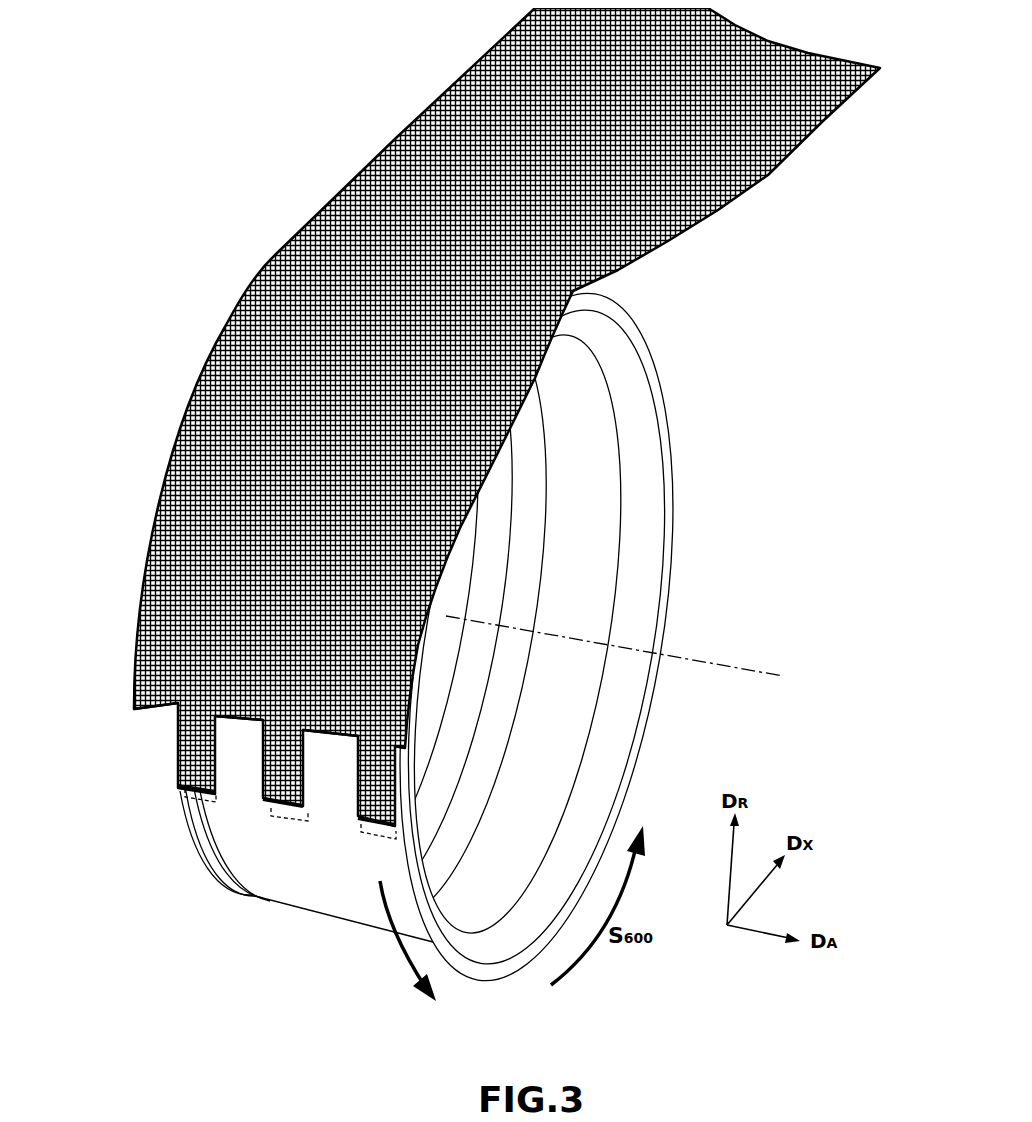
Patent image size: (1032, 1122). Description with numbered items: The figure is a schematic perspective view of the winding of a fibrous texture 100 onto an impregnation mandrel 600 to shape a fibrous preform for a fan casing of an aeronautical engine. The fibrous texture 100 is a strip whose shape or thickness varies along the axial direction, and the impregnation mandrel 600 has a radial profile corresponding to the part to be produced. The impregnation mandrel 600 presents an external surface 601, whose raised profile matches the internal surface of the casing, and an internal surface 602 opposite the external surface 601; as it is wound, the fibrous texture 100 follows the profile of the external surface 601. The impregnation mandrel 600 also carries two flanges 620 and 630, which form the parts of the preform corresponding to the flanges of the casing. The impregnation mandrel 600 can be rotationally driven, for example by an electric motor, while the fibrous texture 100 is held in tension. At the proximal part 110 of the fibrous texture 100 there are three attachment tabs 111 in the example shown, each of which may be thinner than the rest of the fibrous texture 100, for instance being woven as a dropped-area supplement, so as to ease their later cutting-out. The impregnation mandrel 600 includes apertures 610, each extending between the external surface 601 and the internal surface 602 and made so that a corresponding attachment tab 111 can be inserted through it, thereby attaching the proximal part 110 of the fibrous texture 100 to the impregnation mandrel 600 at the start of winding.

The fibrous texture 100 is at (381, 126).
The proximal part 110 is at (148, 724).
The attachment tab 111 is at (368, 777).
The impregnation mandrel 600 is at (447, 634).
The external surface 601 is at (260, 867).
The internal surface 602 is at (413, 847).
The aperture 610 is at (195, 792).
The flange 620 is at (483, 968).
The flange 630 is at (202, 913).